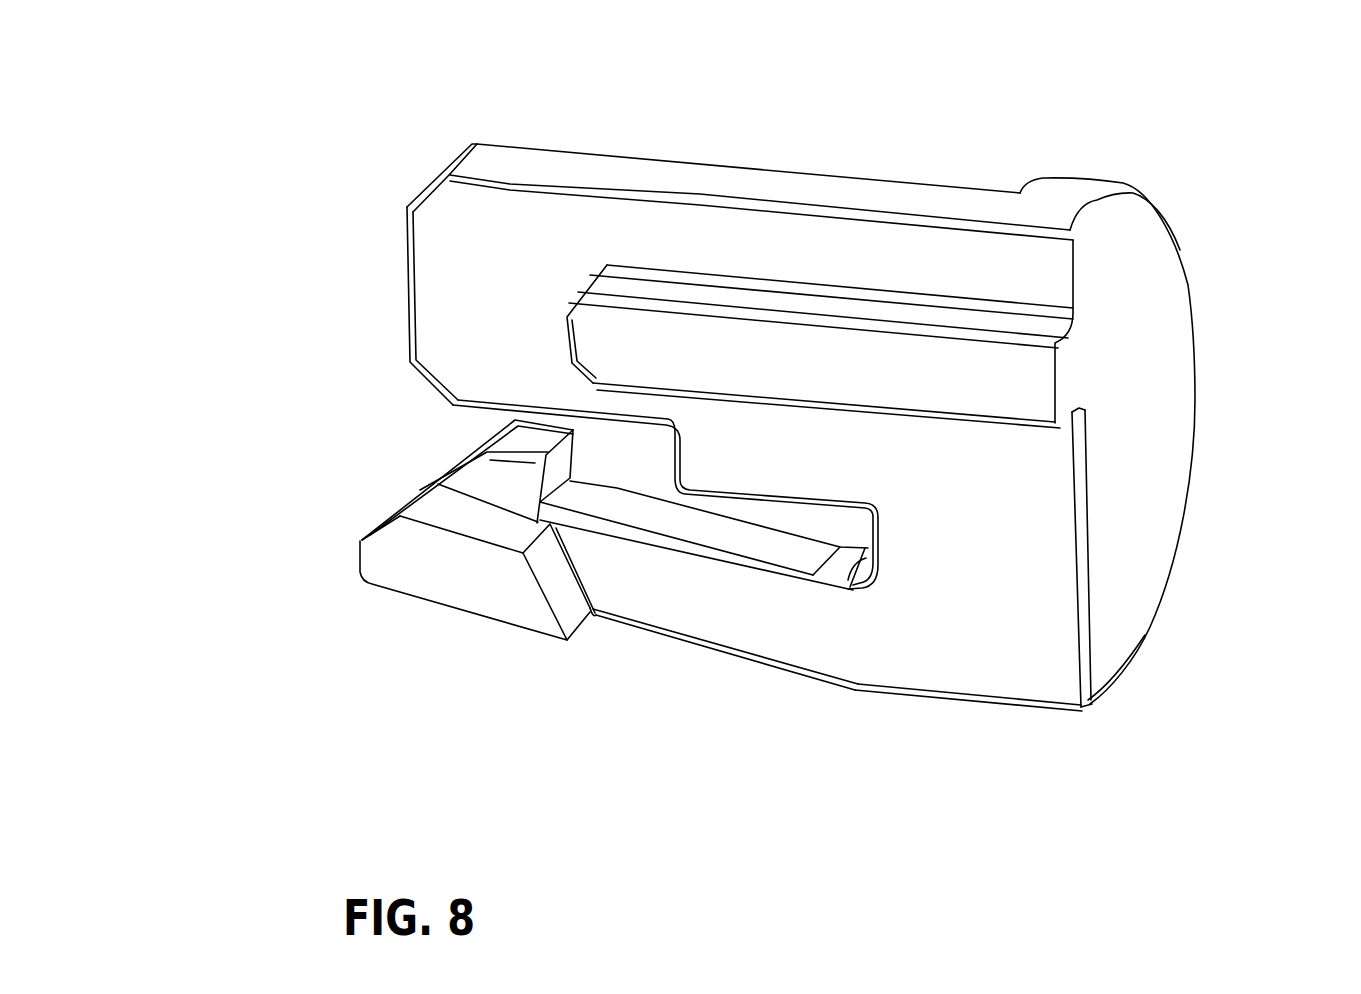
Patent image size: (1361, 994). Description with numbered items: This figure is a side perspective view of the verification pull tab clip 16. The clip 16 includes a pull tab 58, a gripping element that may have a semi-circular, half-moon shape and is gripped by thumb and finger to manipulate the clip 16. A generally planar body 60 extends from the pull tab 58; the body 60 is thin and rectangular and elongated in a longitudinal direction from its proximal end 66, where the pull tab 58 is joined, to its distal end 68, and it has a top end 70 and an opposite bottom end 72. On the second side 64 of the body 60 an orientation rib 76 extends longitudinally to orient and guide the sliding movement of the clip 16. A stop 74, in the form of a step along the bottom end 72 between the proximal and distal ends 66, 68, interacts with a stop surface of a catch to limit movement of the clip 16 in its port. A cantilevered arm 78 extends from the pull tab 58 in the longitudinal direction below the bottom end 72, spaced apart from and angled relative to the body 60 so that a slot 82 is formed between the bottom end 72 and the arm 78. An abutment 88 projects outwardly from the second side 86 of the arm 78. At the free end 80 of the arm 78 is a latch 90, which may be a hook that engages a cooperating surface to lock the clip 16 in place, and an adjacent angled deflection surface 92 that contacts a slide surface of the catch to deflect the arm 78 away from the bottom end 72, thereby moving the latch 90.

The verification pull tab clip 16 is at (812, 93).
The pull tab 58 is at (1195, 367).
The body 60 is at (423, 177).
The second side 64 is at (489, 267).
The proximal end 66 is at (1080, 658).
The distal end 68 is at (415, 260).
The top end 70 is at (905, 185).
The bottom end 72 is at (467, 416).
The stop 74 is at (675, 462).
The orientation rib 76 is at (990, 422).
The cantilevered arm 78 is at (818, 680).
The free end 80 is at (400, 503).
The slot 82 is at (853, 586).
The second side 86 is at (744, 600).
The abutment 88 is at (463, 533).
The latch 90 is at (560, 456).
The angled deflection surface 92 is at (452, 462).